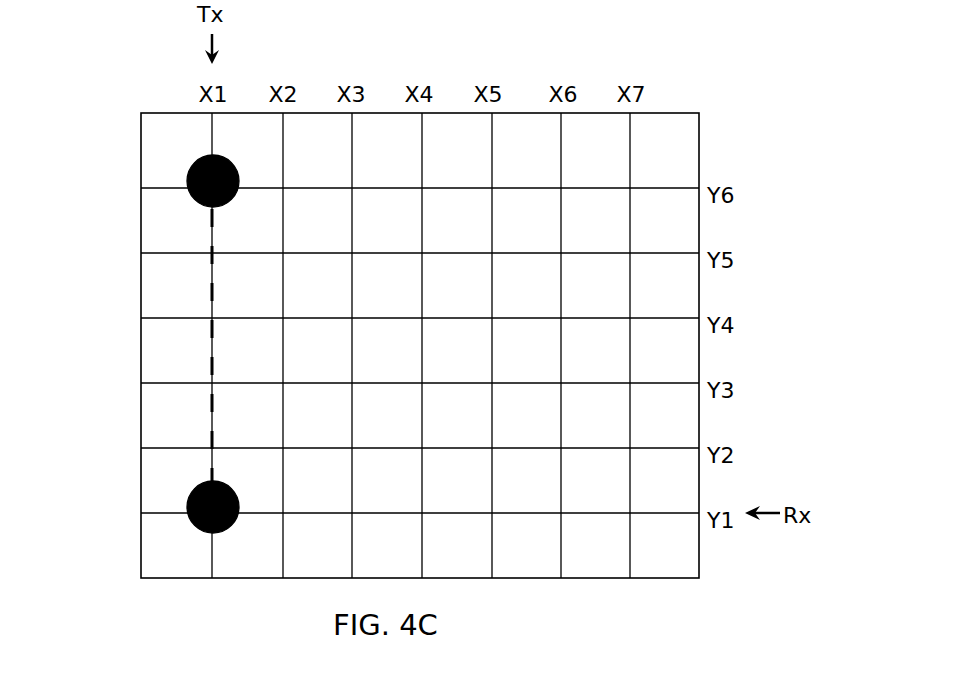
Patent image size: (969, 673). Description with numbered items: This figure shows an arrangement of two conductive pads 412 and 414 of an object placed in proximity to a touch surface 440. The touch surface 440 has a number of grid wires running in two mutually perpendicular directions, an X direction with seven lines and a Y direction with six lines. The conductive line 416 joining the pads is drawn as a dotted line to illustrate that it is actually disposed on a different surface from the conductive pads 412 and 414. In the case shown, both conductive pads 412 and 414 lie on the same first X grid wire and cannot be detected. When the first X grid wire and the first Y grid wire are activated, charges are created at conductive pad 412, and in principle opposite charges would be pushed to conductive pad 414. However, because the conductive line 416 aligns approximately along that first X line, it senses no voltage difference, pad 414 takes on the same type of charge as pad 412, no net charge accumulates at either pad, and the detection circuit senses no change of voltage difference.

The conductive pad 412 is at (187, 512).
The conductive pad 414 is at (190, 178).
The conductive line 416 is at (212, 362).
The touch surface 440 is at (700, 139).